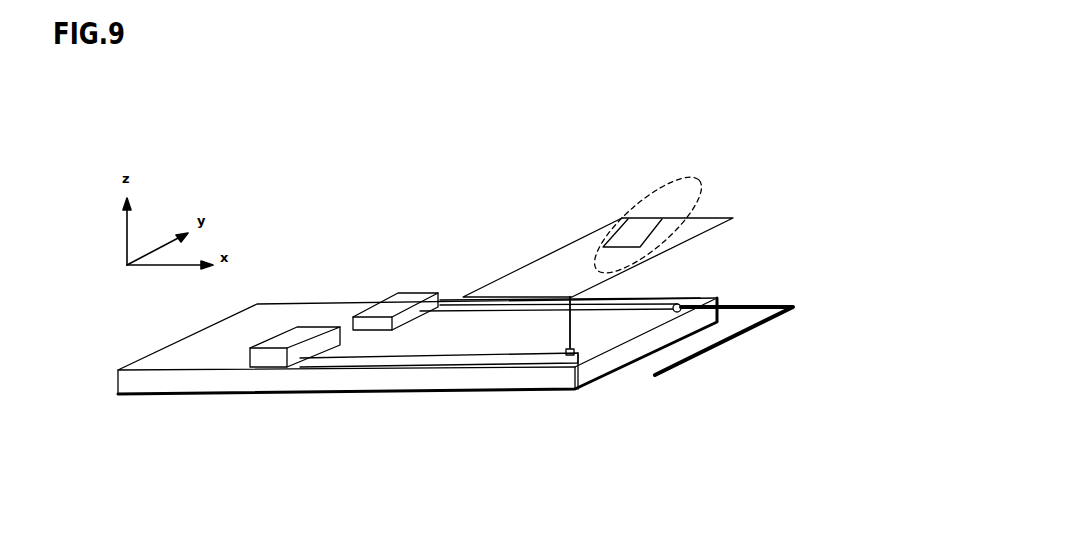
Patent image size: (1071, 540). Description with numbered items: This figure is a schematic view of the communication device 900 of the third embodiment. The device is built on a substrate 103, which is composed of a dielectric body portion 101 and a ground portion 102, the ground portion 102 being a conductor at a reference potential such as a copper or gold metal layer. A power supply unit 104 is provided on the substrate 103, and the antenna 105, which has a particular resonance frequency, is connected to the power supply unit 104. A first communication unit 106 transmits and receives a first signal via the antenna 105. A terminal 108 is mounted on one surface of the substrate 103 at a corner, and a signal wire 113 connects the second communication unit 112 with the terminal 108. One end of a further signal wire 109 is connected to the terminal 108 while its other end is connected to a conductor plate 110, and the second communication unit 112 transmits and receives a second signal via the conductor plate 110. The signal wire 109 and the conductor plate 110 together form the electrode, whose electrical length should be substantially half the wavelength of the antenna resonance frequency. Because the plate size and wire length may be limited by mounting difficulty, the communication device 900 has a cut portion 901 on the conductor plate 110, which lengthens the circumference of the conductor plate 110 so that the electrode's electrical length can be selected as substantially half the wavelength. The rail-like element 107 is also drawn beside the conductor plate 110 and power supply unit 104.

The communication device 900 is at (692, 101).
The cut portion 901 is at (705, 185).
The dielectric body portion 101 is at (125, 396).
The ground portion 102 is at (105, 458).
The substrate 103 is at (411, 396).
The power supply unit 104 is at (683, 303).
The antenna 105 is at (741, 305).
The first communication unit 106 is at (393, 308).
The rail 107 is at (649, 301).
The terminal 108 is at (578, 388).
The signal wire 109 is at (568, 352).
The conductor plate 110 is at (557, 263).
The second communication unit 112 is at (298, 343).
The signal wire 113 is at (440, 354).